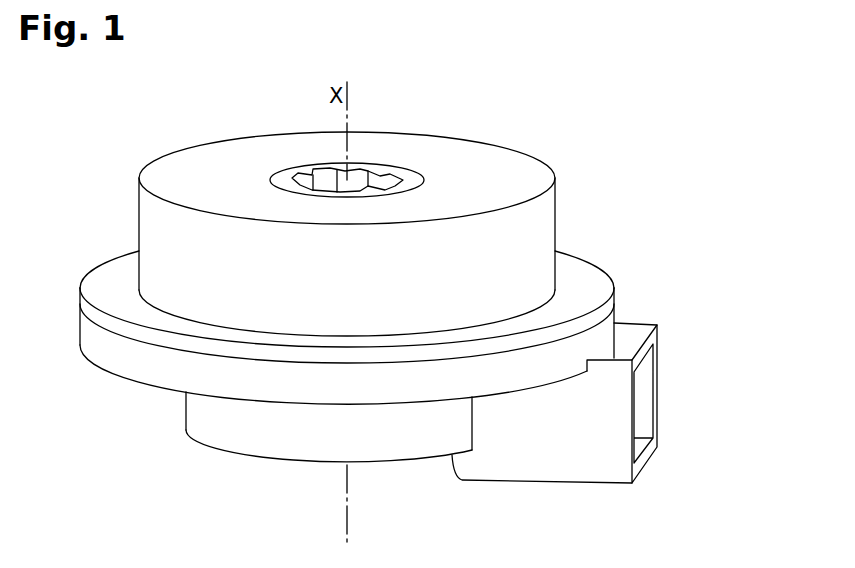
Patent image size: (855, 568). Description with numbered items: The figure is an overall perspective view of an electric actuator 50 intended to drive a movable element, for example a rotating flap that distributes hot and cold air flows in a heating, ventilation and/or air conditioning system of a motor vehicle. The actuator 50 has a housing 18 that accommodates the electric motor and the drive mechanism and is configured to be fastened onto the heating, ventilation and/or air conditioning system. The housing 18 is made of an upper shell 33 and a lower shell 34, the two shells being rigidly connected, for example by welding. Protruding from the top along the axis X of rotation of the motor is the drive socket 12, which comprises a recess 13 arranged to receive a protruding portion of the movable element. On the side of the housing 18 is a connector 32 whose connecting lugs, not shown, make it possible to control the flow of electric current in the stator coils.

The electric actuator 50 is at (543, 136).
The drive socket 12 is at (283, 178).
The recess 13 is at (358, 174).
The housing 18 is at (110, 283).
The upper shell 33 is at (583, 293).
The lower shell 34 is at (372, 385).
The connector 32 is at (646, 395).